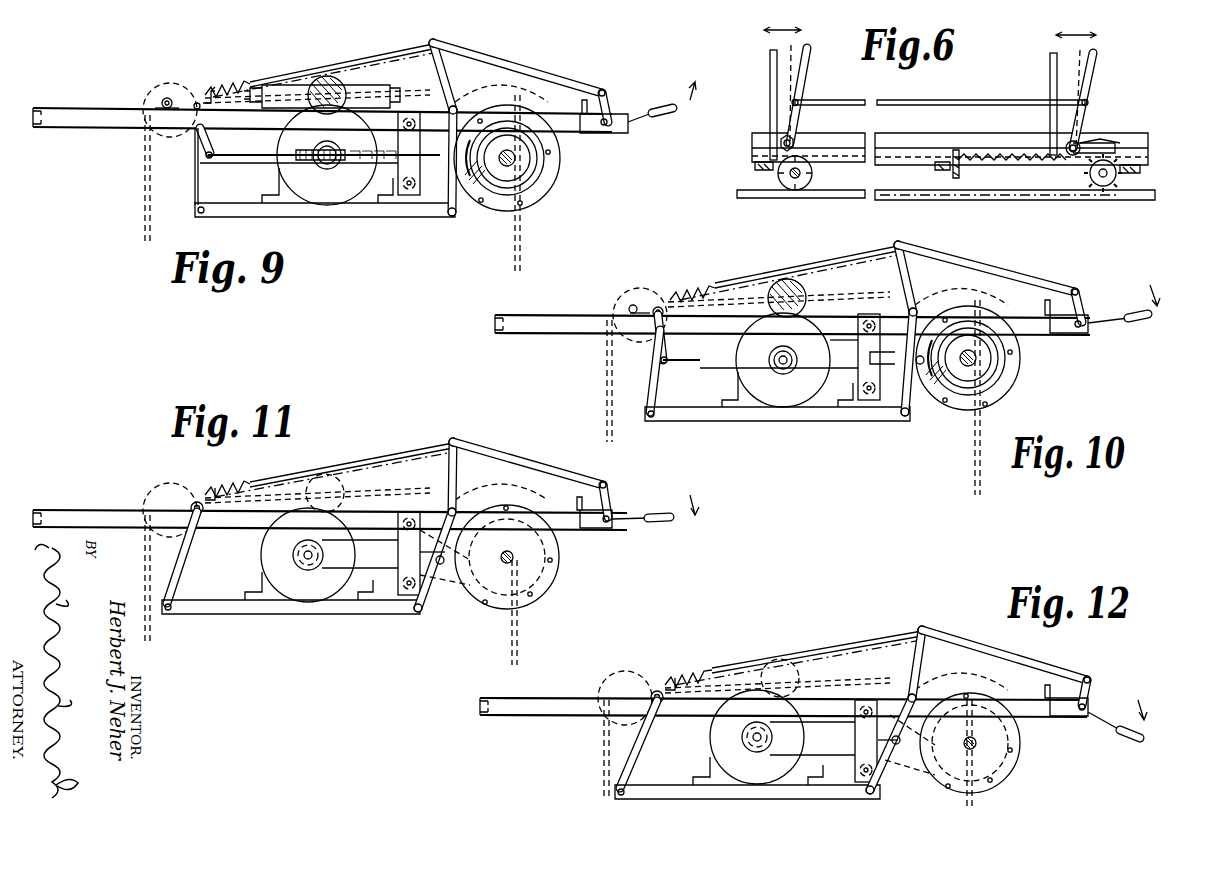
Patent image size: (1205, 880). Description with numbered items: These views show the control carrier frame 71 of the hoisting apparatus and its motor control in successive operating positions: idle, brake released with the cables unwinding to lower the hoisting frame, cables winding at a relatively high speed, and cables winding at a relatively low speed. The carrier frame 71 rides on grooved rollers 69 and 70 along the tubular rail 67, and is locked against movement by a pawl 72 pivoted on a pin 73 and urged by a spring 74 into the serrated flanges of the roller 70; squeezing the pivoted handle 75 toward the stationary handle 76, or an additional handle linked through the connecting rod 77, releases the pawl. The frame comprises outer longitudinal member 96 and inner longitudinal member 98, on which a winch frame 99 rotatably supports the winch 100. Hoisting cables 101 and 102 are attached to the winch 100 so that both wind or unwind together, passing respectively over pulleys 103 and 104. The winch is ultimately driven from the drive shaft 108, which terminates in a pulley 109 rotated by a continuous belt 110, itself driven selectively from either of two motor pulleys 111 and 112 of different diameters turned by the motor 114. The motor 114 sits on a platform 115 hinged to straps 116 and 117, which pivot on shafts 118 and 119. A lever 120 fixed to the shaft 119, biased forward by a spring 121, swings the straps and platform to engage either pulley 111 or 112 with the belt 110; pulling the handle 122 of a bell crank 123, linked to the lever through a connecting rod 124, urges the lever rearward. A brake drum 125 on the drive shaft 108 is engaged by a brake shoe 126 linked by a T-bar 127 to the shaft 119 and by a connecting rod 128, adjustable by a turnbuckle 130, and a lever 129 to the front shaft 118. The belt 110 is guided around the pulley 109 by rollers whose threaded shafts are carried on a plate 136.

In FIG. 6, the tubular rail 67 is at (1085, 198).
In FIG. 6, the grooved roller 69 is at (790, 186).
In FIG. 6, the grooved roller 70 is at (1118, 170).
In FIG. 9, the control carrier frame 71 is at (67, 100).
In FIG. 6, the control carrier frame 71 is at (742, 138).
In FIG. 10, the control carrier frame 71 is at (552, 337).
In FIG. 11, the control carrier frame 71 is at (97, 500).
In FIG. 12, the control carrier frame 71 is at (537, 692).
In FIG. 6, the pawl 72 is at (1118, 148).
In FIG. 6, the pin 73 is at (1085, 143).
In FIG. 6, the spring 74 is at (1005, 155).
In FIG. 6, the pivoted handle 75 is at (810, 60).
In FIG. 6, the stationary handle 76 is at (770, 60).
In FIG. 6, the connecting rod 77 is at (950, 100).
In FIG. 9, the outer longitudinal member 96 is at (430, 112).
In FIG. 10, the outer longitudinal member 96 is at (845, 320).
In FIG. 11, the outer longitudinal member 96 is at (364, 492).
In FIG. 12, the outer longitudinal member 96 is at (829, 682).
In FIG. 9, the inner longitudinal member 98 is at (98, 118).
In FIG. 10, the inner longitudinal member 98 is at (570, 313).
In FIG. 11, the inner longitudinal member 98 is at (65, 508).
In FIG. 12, the inner longitudinal member 98 is at (550, 710).
In FIG. 9, the winch frame 99 is at (300, 95).
In FIG. 9, the winch 100 is at (288, 57).
In FIG. 10, the winch 100 is at (795, 280).
In FIG. 11, the winch 100 is at (318, 478).
In FIG. 12, the winch 100 is at (772, 665).
In FIG. 9, the hoisting cable 101 is at (143, 196).
In FIG. 10, the hoisting cable 101 is at (595, 400).
In FIG. 11, the hoisting cable 101 is at (158, 625).
In FIG. 12, the hoisting cable 101 is at (606, 750).
In FIG. 9, the hoisting cable 102 is at (521, 258).
In FIG. 10, the hoisting cable 102 is at (990, 440).
In FIG. 11, the hoisting cable 102 is at (529, 638).
In FIG. 12, the hoisting cable 102 is at (969, 755).
In FIG. 9, the pulley 103 is at (147, 92).
In FIG. 10, the pulley 103 is at (618, 295).
In FIG. 11, the pulley 103 is at (155, 485).
In FIG. 12, the pulley 103 is at (618, 680).
In FIG. 9, the pulley 104 is at (508, 97).
In FIG. 10, the pulley 104 is at (968, 298).
In FIG. 11, the pulley 104 is at (505, 492).
In FIG. 12, the pulley 104 is at (965, 690).
In FIG. 9, the drive shaft 108 is at (518, 158).
In FIG. 10, the drive shaft 108 is at (980, 358).
In FIG. 11, the drive shaft 108 is at (492, 545).
In FIG. 12, the drive shaft 108 is at (955, 732).
In FIG. 11, the pulley 109 is at (550, 566).
In FIG. 12, the pulley 109 is at (1012, 766).
In FIG. 9, the continuous belt 110 is at (345, 200).
In FIG. 10, the continuous belt 110 is at (762, 433).
In FIG. 11, the continuous belt 110 is at (260, 625).
In FIG. 12, the continuous belt 110 is at (700, 765).
In FIG. 9, the pulley 111 is at (300, 124).
In FIG. 10, the pulley 111 is at (797, 360).
In FIG. 11, the pulley 111 is at (323, 556).
In FIG. 12, the pulley 111 is at (772, 738).
In FIG. 9, the pulley 112 is at (320, 175).
In FIG. 10, the pulley 112 is at (720, 375).
In FIG. 11, the pulley 112 is at (272, 545).
In FIG. 12, the pulley 112 is at (725, 725).
In FIG. 9, the motor 114 is at (322, 199).
In FIG. 10, the motor 114 is at (736, 385).
In FIG. 11, the motor 114 is at (265, 575).
In FIG. 12, the motor 114 is at (768, 781).
In FIG. 9, the platform 115 is at (272, 210).
In FIG. 10, the platform 115 is at (735, 414).
In FIG. 11, the platform 115 is at (238, 607).
In FIG. 12, the platform 115 is at (617, 793).
In FIG. 9, the strap 116 is at (196, 175).
In FIG. 10, the strap 116 is at (648, 368).
In FIG. 11, the strap 116 is at (165, 558).
In FIG. 12, the strap 116 is at (636, 755).
In FIG. 9, the strap 117 is at (446, 218).
In FIG. 10, the strap 117 is at (896, 418).
In FIG. 11, the strap 117 is at (435, 598).
In FIG. 12, the strap 117 is at (886, 775).
In FIG. 9, the shaft 118 is at (192, 100).
In FIG. 10, the shaft 118 is at (660, 300).
In FIG. 11, the shaft 118 is at (202, 518).
In FIG. 12, the shaft 118 is at (660, 712).
In FIG. 9, the shaft 119 is at (456, 103).
In FIG. 10, the shaft 119 is at (905, 312).
In FIG. 11, the shaft 119 is at (447, 510).
In FIG. 12, the shaft 119 is at (907, 695).
In FIG. 9, the lever 120 is at (447, 65).
In FIG. 10, the lever 120 is at (878, 268).
In FIG. 11, the lever 120 is at (457, 469).
In FIG. 12, the lever 120 is at (920, 661).
In FIG. 9, the spring 121 is at (372, 58).
In FIG. 10, the spring 121 is at (718, 286).
In FIG. 11, the spring 121 is at (436, 463).
In FIG. 12, the spring 121 is at (896, 653).
In FIG. 9, the handle 122 is at (660, 118).
In FIG. 10, the handle 122 is at (1133, 325).
In FIG. 11, the handle 122 is at (657, 512).
In FIG. 12, the handle 122 is at (1128, 740).
In FIG. 9, the bell crank 123 is at (611, 105).
In FIG. 10, the bell crank 123 is at (1085, 305).
In FIG. 11, the bell crank 123 is at (598, 497).
In FIG. 12, the bell crank 123 is at (1083, 675).
In FIG. 9, the connecting rod 124 is at (526, 72).
In FIG. 10, the connecting rod 124 is at (970, 250).
In FIG. 11, the connecting rod 124 is at (540, 461).
In FIG. 12, the connecting rod 124 is at (1010, 643).
In FIG. 9, the brake drum 125 is at (527, 172).
In FIG. 10, the brake drum 125 is at (985, 376).
In FIG. 9, the brake shoe 126 is at (487, 196).
In FIG. 10, the brake shoe 126 is at (978, 402).
In FIG. 9, the T-bar 127 is at (440, 216).
In FIG. 10, the T-bar 127 is at (925, 404).
In FIG. 11, the T-bar 127 is at (429, 582).
In FIG. 12, the T-bar 127 is at (883, 765).
In FIG. 9, the connecting rod 128 is at (268, 153).
In FIG. 10, the connecting rod 128 is at (684, 358).
In FIG. 9, the lever 129 is at (200, 142).
In FIG. 10, the lever 129 is at (658, 345).
In FIG. 9, the turnbuckle 130 is at (300, 165).
In FIG. 9, the plate 136 is at (522, 200).
In FIG. 10, the plate 136 is at (1005, 395).
In FIG. 11, the plate 136 is at (532, 605).
In FIG. 12, the plate 136 is at (1002, 782).